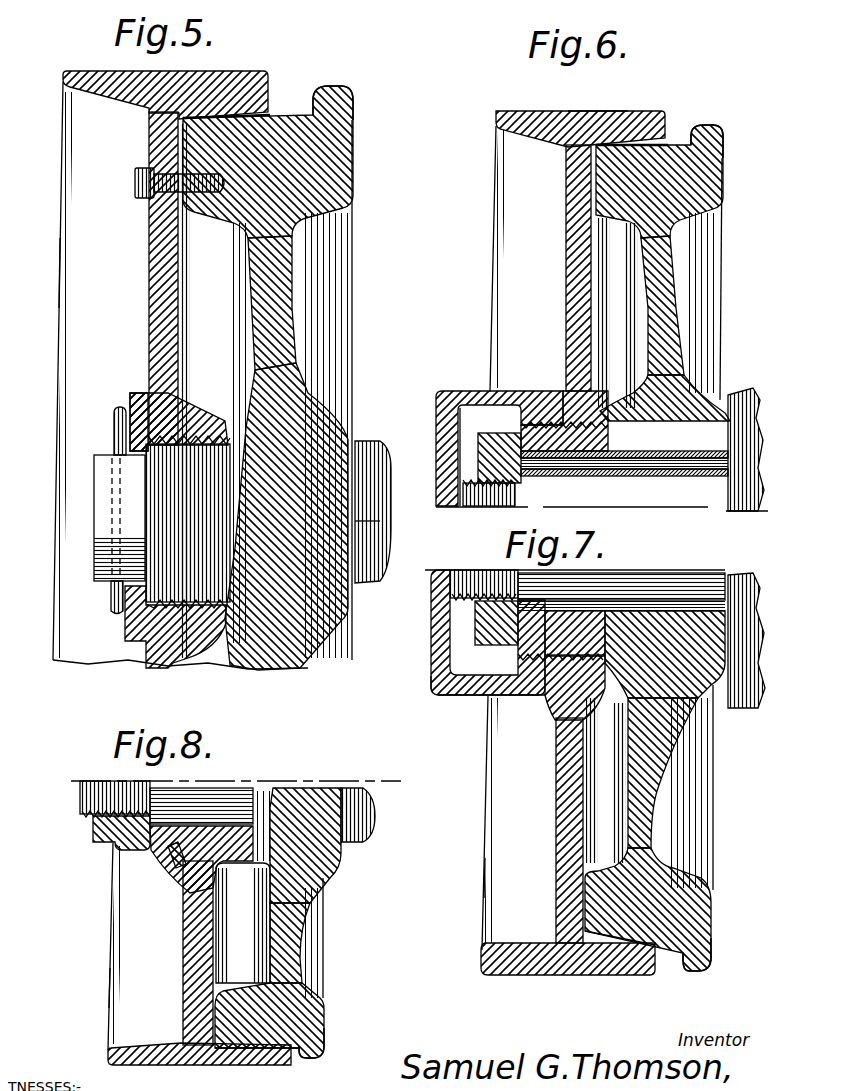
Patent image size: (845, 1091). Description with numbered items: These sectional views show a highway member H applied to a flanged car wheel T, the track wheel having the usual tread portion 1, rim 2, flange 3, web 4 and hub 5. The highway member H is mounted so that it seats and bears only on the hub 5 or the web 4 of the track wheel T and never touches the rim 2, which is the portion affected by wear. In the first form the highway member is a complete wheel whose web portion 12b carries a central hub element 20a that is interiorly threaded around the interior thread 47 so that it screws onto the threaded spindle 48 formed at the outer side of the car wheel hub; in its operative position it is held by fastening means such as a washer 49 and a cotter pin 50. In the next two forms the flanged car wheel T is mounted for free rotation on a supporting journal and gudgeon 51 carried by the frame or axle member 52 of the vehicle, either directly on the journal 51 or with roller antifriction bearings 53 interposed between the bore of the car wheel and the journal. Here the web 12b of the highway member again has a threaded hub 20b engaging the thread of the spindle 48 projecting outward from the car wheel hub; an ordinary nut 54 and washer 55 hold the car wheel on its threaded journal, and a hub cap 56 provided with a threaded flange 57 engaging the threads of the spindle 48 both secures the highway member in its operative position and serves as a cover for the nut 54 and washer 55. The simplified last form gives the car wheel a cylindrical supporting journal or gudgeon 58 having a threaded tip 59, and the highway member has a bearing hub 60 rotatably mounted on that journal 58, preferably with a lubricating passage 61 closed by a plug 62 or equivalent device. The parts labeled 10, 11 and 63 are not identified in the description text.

In FIG. 5, the tread portion 1 is at (268, 108).
In FIG. 6, the tread portion 1 is at (668, 137).
In FIG. 7, the tread portion 1 is at (634, 960).
In FIG. 8, the tread portion 1 is at (266, 1046).
In FIG. 5, the rim 2 is at (194, 134).
In FIG. 6, the rim 2 is at (604, 160).
In FIG. 7, the rim 2 is at (603, 905).
In FIG. 8, the rim 2 is at (234, 1005).
In FIG. 5, the flange 3 is at (326, 92).
In FIG. 6, the flange 3 is at (705, 130).
In FIG. 7, the flange 3 is at (693, 953).
In FIG. 8, the flange 3 is at (306, 1042).
In FIG. 5, the web 4 is at (270, 310).
In FIG. 6, the web 4 is at (656, 300).
In FIG. 7, the web 4 is at (652, 755).
In FIG. 8, the web 4 is at (290, 912).
In FIG. 5, the hub 5 is at (312, 432).
In FIG. 6, the hub 5 is at (674, 400).
In FIG. 7, the hub 5 is at (670, 610).
In FIG. 8, the hub 5 is at (305, 800).
In FIG. 5, the hanger flange 10 is at (92, 64).
In FIG. 6, the hanger flange 10 is at (553, 94).
In FIG. 7, the hanger flange 10 is at (525, 968).
In FIG. 8, the hanger flange 10 is at (210, 1058).
In FIG. 5, the hanger flange face 11 is at (70, 84).
In FIG. 6, the hanger flange face 11 is at (510, 118).
In FIG. 7, the hanger flange face 11 is at (495, 950).
In FIG. 8, the hanger flange face 11 is at (125, 1043).
In FIG. 5, the web portion 12b is at (152, 296).
In FIG. 6, the web portion 12b is at (568, 290).
In FIG. 7, the web portion 12b is at (558, 818).
In FIG. 8, the web portion 12b is at (190, 958).
In FIG. 5, the central hub element 20a is at (176, 400).
In FIG. 6, the threaded hub 20b is at (580, 392).
In FIG. 7, the threaded hub 20b is at (546, 700).
In FIG. 5, the interior thread 47 is at (152, 437).
In FIG. 5, the threaded spindle 48 is at (158, 520).
In FIG. 6, the threaded spindle 48 is at (470, 492).
In FIG. 7, the threaded spindle 48 is at (465, 580).
In FIG. 5, the washer 49 is at (127, 392).
In FIG. 5, the cotter pin 50 is at (108, 432).
In FIG. 6, the supporting journal and gudgeon 51 is at (624, 480).
In FIG. 7, the supporting journal and gudgeon 51 is at (621, 616).
In FIG. 6, the frame or axle member 52 is at (743, 392).
In FIG. 6, the roller antifriction bearings 53 is at (586, 456).
In FIG. 6, the nut 54 is at (478, 447).
In FIG. 7, the nut 54 is at (480, 615).
In FIG. 6, the washer 55 is at (510, 415).
In FIG. 7, the washer 55 is at (500, 640).
In FIG. 7, the hub cap 56 is at (440, 680).
In FIG. 7, the threaded flange 57 is at (493, 690).
In FIG. 8, the cylindrical supporting journal or gudgeon 58 is at (230, 792).
In FIG. 8, the threaded tip 59 is at (120, 770).
In FIG. 8, the bearing hub 60 is at (212, 848).
In FIG. 8, the lubricating passage 61 is at (162, 856).
In FIG. 8, the plug 62 is at (170, 862).
In FIG. 8, the clamp block 63 is at (96, 838).
In FIG. 5, the highway member H is at (54, 262).
In FIG. 6, the highway member H is at (623, 102).
In FIG. 7, the highway member H is at (474, 870).
In FIG. 8, the highway member H is at (103, 980).
In FIG. 5, the flanged car wheel T is at (348, 272).
In FIG. 6, the flanged car wheel T is at (718, 182).
In FIG. 7, the flanged car wheel T is at (712, 778).
In FIG. 8, the flanged car wheel T is at (320, 950).